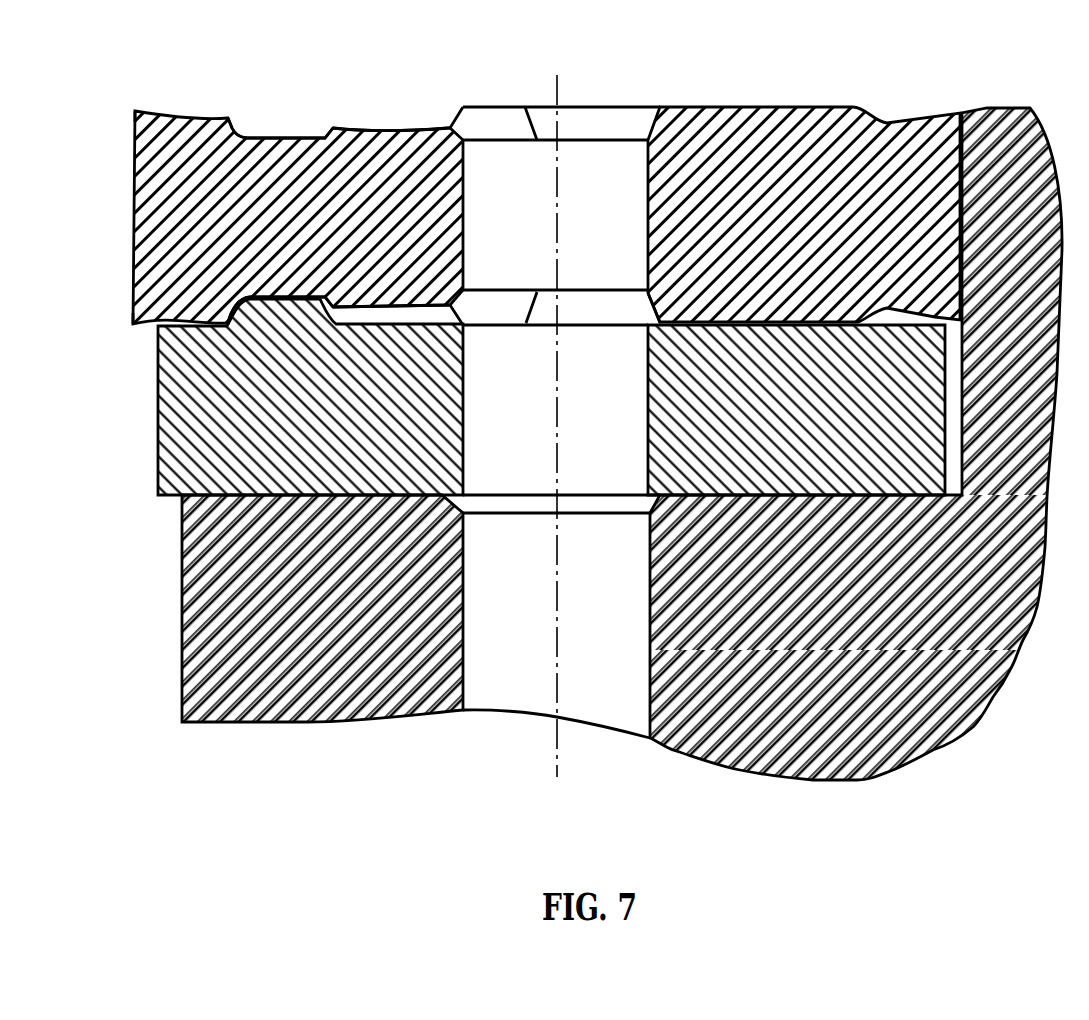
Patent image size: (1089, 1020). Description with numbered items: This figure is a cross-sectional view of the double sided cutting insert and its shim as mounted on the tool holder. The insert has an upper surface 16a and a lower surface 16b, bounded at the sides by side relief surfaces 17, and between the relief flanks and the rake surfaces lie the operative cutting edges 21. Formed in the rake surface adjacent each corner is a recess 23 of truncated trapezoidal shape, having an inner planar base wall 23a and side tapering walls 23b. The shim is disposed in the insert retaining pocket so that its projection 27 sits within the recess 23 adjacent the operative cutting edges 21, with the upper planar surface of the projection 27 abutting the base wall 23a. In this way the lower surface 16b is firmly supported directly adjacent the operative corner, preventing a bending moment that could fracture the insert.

The side relief surfaces 17 is at (135, 172).
The cutting edges 21 is at (135, 109).
The projection 27 is at (265, 297).
The recess 23 is at (322, 307).
The base wall 23a is at (293, 137).
The side tapering walls 23b is at (237, 131).
The upper surface 16a is at (407, 121).
The lower surface 16b is at (408, 316).